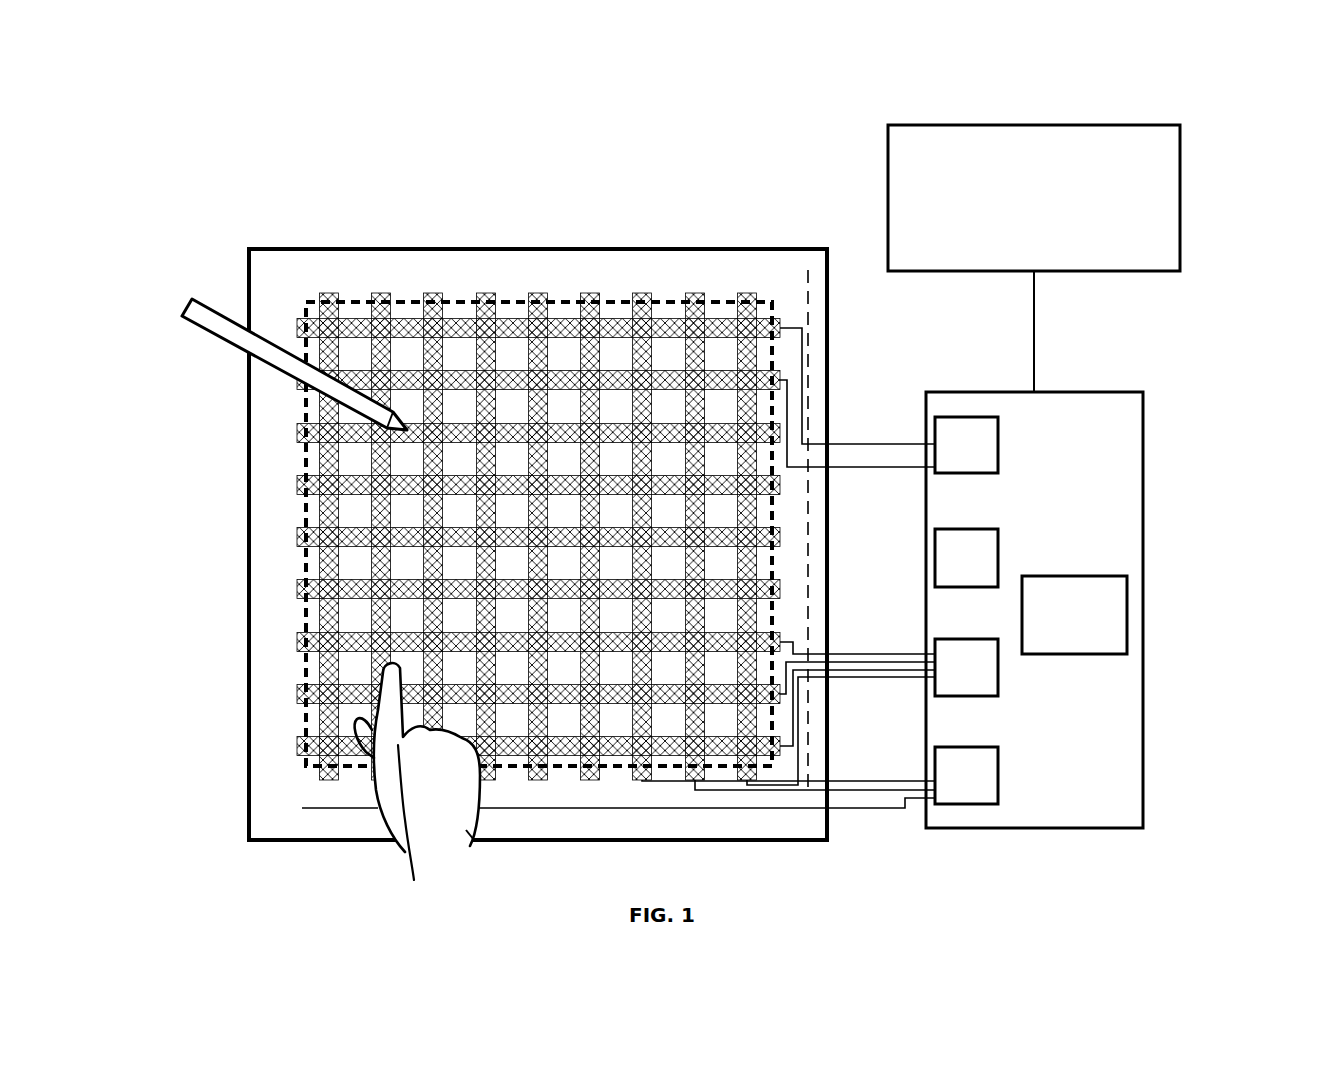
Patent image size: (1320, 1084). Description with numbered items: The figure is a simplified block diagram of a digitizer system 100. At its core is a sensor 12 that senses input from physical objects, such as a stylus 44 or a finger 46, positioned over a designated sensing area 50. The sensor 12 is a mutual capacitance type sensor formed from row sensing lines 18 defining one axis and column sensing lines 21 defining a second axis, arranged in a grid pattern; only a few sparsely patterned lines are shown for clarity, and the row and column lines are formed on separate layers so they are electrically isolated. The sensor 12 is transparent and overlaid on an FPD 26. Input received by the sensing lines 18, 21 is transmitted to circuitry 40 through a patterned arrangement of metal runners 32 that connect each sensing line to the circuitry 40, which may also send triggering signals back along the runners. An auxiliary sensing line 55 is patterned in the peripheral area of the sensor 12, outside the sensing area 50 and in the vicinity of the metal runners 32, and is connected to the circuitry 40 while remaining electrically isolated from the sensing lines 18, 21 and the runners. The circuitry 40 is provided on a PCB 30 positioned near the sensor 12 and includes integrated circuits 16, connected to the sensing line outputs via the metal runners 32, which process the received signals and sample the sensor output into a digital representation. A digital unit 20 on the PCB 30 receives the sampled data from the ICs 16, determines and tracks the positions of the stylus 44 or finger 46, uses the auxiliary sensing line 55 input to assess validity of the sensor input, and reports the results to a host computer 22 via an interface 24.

The digitizer system 100 is at (700, 170).
The sensor 12 is at (370, 270).
The FPD 26 is at (617, 249).
The column sensing lines 21 is at (433, 296).
The row sensing lines 18 is at (297, 485).
The sensing area 50 is at (306, 300).
The circuitry 40 is at (372, 481).
The stylus 44 is at (230, 310).
The finger 46 is at (417, 788).
The auxiliary sensing line 55 is at (808, 333).
The metal runners 32 is at (788, 443).
The host computer 22 is at (1181, 178).
The interface 24 is at (1035, 340).
The PCB 30 is at (1145, 440).
The Integrated Circuits 16 is at (1000, 452).
The digital unit 20 is at (1075, 576).